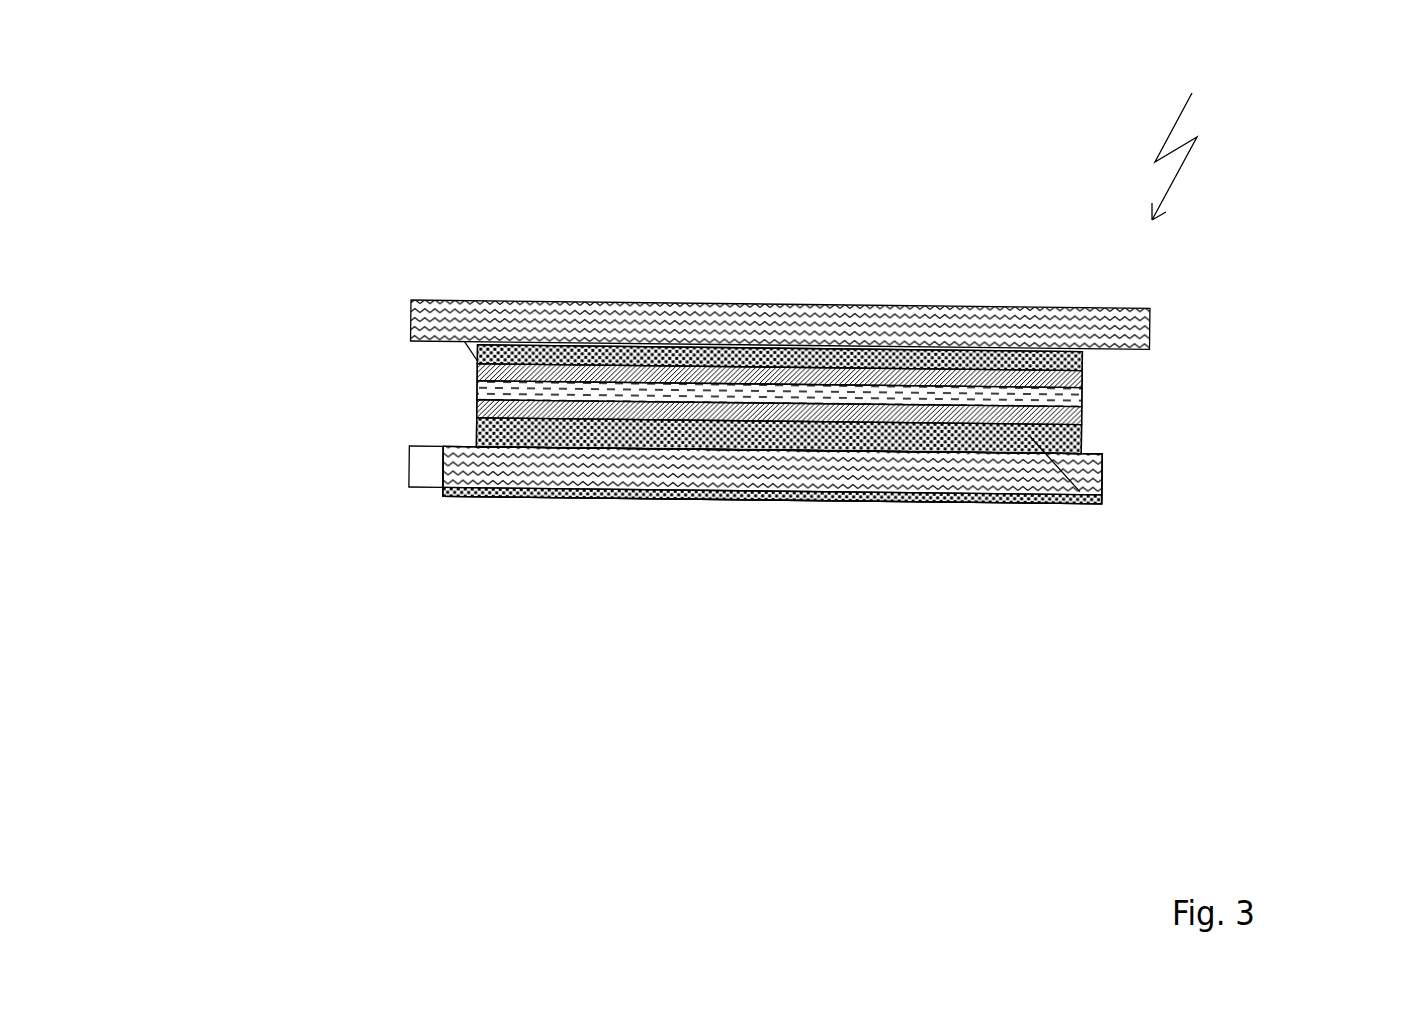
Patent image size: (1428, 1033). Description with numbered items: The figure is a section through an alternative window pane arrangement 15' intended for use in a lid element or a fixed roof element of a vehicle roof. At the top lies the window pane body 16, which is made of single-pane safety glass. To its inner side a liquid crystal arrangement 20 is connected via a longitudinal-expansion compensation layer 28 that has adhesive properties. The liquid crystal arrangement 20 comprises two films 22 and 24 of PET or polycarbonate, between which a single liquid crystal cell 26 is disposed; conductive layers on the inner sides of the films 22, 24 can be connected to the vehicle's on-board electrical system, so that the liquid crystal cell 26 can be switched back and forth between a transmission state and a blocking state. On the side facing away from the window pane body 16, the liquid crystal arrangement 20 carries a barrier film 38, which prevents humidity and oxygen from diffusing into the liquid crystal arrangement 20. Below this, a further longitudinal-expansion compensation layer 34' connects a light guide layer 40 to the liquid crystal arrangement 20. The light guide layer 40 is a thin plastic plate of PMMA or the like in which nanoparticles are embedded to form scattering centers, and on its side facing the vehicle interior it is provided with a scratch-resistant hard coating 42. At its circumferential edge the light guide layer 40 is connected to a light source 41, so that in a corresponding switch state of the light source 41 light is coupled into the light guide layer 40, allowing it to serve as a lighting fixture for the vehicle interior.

The window pane arrangement 15' is at (1188, 128).
The window pane body 16 is at (1118, 311).
The liquid crystal arrangement 20 is at (1083, 395).
The film 22 is at (445, 325).
The film 24 is at (500, 413).
The liquid crystal cell 26 is at (518, 388).
The longitudinal-expansion compensation layer 28 is at (519, 353).
The longitudinal-expansion compensation layer 34' is at (849, 561).
The barrier film 38 is at (1063, 428).
The light guide layer 40 is at (573, 467).
The light source 41 is at (430, 475).
The scratch-resistant coating 42 is at (695, 497).